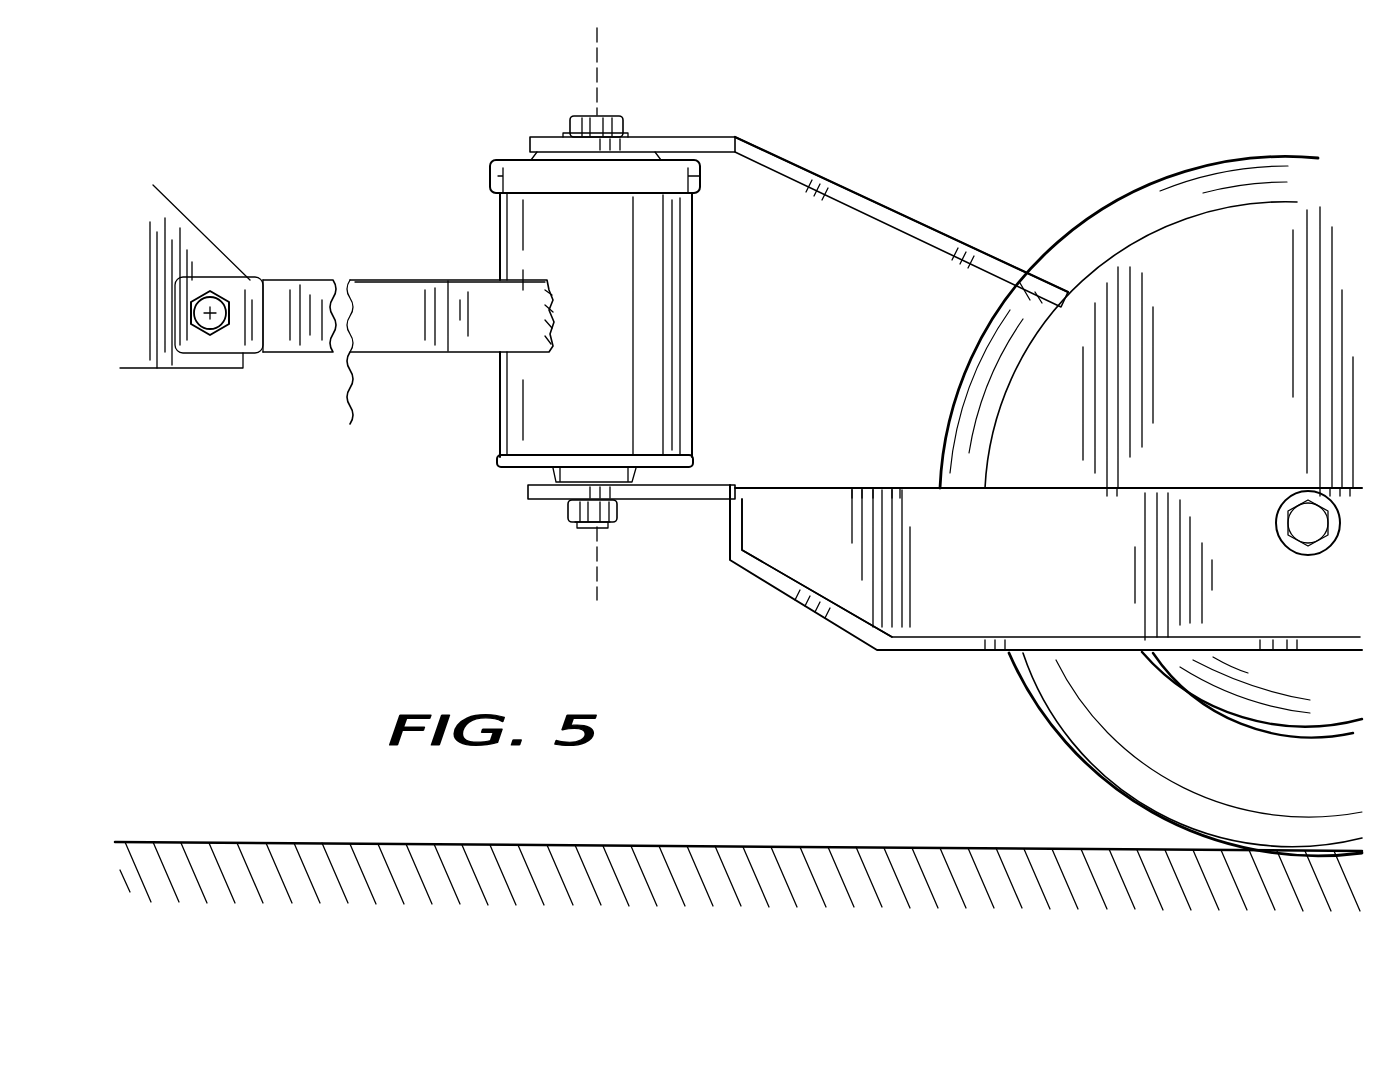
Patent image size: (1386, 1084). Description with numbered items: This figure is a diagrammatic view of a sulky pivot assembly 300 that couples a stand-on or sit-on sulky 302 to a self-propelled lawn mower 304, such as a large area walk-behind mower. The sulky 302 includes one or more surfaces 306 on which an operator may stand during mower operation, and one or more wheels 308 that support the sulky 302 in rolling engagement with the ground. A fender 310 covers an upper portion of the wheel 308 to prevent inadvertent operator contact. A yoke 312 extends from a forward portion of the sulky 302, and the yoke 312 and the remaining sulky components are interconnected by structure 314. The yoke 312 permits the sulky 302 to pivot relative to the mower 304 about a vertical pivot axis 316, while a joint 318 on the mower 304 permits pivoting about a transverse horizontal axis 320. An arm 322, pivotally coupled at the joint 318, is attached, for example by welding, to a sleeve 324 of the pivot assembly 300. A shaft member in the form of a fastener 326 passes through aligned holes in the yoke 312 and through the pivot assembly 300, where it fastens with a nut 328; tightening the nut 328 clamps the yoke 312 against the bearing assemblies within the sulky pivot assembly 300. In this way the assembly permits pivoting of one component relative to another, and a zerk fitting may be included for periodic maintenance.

The sulky pivot assembly 300 is at (493, 244).
The sulky 302 is at (913, 210).
The lawn mower 304 is at (184, 195).
The surface 306 is at (1003, 640).
The wheel 308 is at (1038, 713).
The fender 310 is at (1112, 205).
The yoke 312 is at (738, 137).
The structure 314 is at (808, 487).
The vertical pivot axis 316 is at (592, 580).
The joint 318 is at (226, 336).
The transverse horizontal axis 320 is at (203, 328).
The arm 322 is at (378, 356).
The sleeve 324 is at (698, 277).
The fastener 326 is at (574, 117).
The nut 328 is at (570, 515).